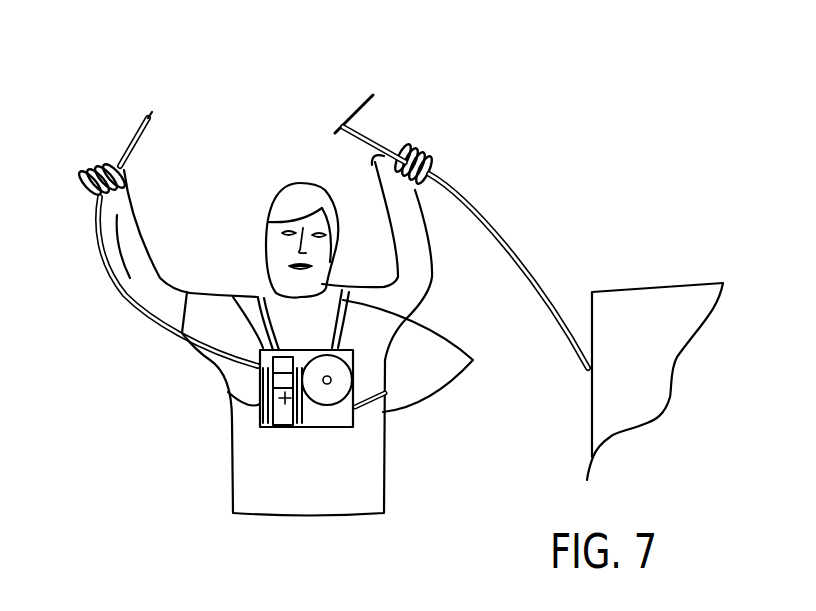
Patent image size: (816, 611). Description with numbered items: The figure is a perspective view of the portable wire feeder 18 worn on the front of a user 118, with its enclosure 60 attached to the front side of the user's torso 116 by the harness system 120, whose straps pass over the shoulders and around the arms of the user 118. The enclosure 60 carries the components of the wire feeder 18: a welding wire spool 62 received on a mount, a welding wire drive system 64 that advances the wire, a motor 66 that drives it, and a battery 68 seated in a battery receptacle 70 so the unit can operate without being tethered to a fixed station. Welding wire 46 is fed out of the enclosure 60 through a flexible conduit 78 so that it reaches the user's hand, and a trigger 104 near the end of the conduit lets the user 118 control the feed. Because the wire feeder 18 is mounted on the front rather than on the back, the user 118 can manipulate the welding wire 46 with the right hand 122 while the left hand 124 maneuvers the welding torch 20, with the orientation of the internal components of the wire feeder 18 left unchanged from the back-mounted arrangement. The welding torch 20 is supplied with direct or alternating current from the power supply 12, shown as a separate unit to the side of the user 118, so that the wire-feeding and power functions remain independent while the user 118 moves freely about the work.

The power supply 12 is at (629, 359).
The wire feeder 18 is at (498, 417).
The welding torch 20 is at (394, 127).
The welding wire 46 is at (147, 124).
The enclosure 60 is at (307, 428).
The welding wire spool 62 is at (336, 379).
The welding wire drive system 64 is at (232, 297).
The motor 66 is at (278, 378).
The battery 68 is at (286, 414).
The battery receptacle 70 is at (262, 394).
The flexible conduit 78 is at (118, 282).
The trigger 104 is at (125, 162).
The torso 116 is at (170, 384).
The user 118 is at (269, 117).
The harness system 120 is at (474, 360).
The right hand 122 is at (84, 198).
The left hand 124 is at (426, 142).